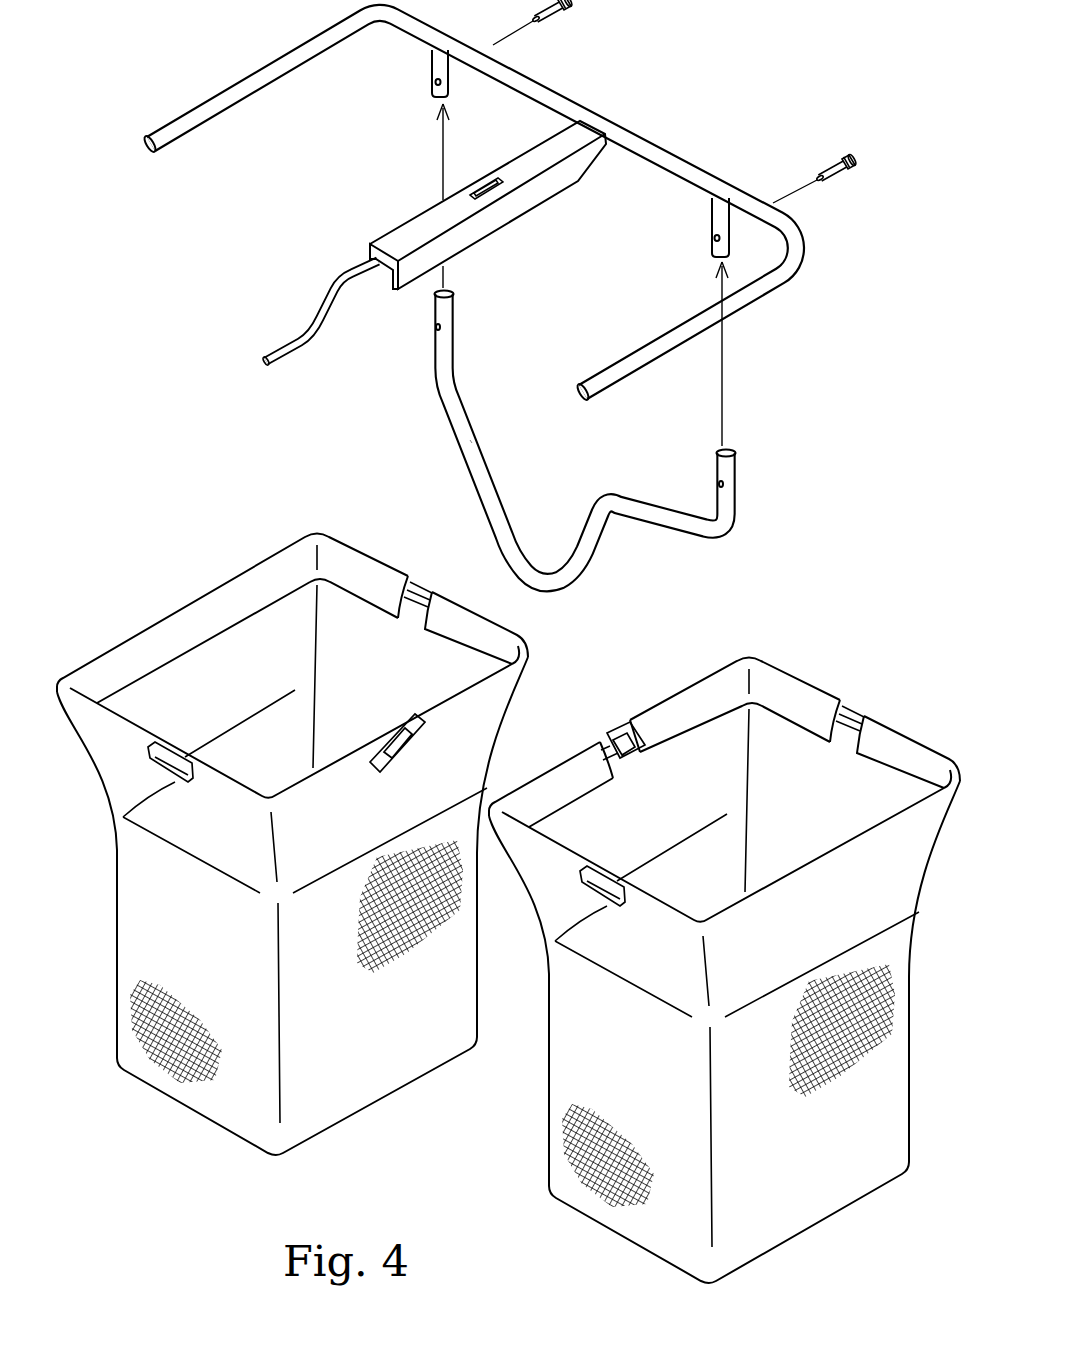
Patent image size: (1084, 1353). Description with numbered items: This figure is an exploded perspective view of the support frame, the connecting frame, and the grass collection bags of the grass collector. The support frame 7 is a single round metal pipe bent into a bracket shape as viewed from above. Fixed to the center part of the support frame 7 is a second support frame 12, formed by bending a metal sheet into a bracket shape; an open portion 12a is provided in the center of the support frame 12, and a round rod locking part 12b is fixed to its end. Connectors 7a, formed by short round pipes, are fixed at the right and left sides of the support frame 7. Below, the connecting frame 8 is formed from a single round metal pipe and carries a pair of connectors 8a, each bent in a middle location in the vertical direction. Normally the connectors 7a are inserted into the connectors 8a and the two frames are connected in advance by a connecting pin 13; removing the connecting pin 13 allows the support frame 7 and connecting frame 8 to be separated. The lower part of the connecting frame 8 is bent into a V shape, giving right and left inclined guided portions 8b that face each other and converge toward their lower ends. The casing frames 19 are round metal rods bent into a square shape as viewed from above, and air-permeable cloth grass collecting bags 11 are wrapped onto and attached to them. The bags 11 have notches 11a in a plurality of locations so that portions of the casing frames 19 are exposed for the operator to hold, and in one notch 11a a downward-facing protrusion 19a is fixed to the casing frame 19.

The support frame 7 is at (652, 131).
The connectors 7a is at (430, 68).
The connecting frame 8 is at (508, 490).
The connectors 8a is at (436, 346).
The inclined guided portions 8b is at (466, 440).
The grass collecting bags 11 is at (360, 1083).
The notches 11a is at (415, 597).
The support frame 12 is at (513, 213).
The open portion 12a is at (490, 182).
The locking part 12b is at (315, 304).
The connecting pin 13 is at (549, 22).
The casing frames 19 is at (172, 752).
The protrusion 19a is at (404, 760).